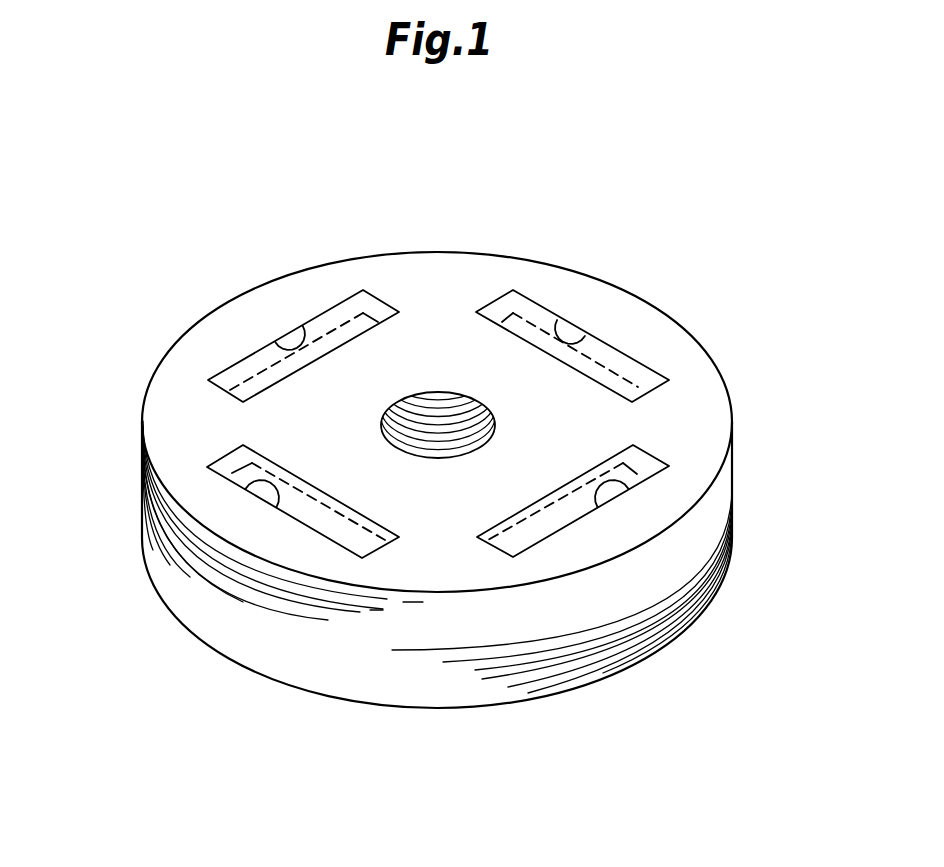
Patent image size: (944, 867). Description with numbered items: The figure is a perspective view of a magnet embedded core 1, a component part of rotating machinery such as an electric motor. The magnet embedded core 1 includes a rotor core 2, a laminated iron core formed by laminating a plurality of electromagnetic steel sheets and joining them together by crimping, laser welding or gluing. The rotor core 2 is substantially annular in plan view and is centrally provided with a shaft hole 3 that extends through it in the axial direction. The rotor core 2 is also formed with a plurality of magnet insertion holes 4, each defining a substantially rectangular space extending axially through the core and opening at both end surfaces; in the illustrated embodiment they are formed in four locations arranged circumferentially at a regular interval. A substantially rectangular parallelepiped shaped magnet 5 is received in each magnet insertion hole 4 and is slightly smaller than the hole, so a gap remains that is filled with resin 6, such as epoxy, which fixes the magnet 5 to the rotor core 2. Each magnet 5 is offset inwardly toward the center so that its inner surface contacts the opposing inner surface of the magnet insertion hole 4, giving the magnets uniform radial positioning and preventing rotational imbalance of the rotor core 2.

The magnet embedded core 1 is at (663, 203).
The rotor core 2 is at (683, 322).
The shaft hole 3 is at (462, 415).
The magnet insertion hole 4 is at (303, 328).
The magnet 5 is at (243, 490).
The resin 6 is at (338, 310).